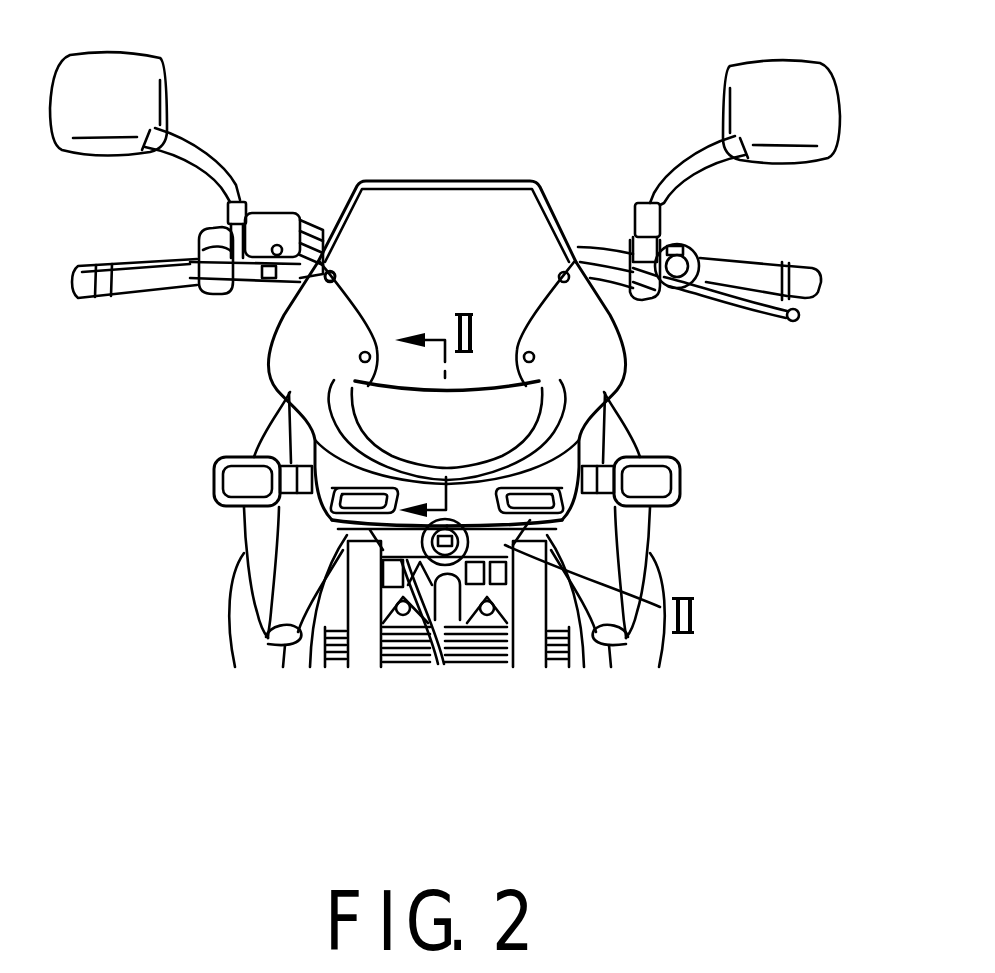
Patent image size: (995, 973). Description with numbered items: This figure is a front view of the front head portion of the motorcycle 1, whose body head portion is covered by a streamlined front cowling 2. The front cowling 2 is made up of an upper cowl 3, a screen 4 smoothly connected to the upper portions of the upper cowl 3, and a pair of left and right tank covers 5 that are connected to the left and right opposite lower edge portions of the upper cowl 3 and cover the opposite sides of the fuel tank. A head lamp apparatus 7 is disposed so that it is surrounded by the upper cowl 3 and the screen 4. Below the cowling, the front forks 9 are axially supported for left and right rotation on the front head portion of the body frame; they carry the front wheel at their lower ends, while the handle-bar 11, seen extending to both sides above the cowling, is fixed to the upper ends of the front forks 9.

The motorcycle 1 is at (437, 66).
The front cowling 2 is at (835, 355).
The upper cowl 3 is at (587, 372).
The screen 4 is at (513, 283).
The tank covers 5 is at (640, 530).
The head lamp apparatus 7 is at (372, 405).
The front forks 9 is at (362, 560).
The handle-bar 11 is at (763, 262).